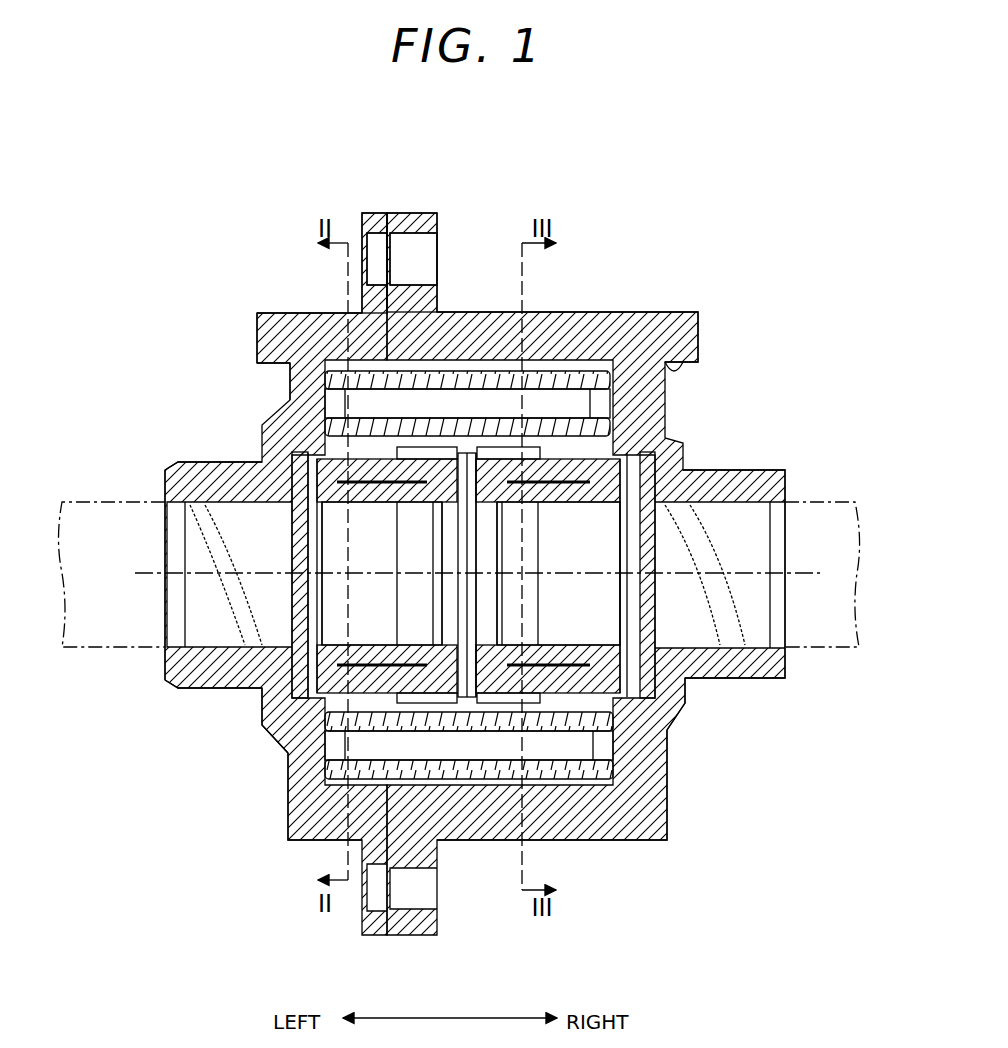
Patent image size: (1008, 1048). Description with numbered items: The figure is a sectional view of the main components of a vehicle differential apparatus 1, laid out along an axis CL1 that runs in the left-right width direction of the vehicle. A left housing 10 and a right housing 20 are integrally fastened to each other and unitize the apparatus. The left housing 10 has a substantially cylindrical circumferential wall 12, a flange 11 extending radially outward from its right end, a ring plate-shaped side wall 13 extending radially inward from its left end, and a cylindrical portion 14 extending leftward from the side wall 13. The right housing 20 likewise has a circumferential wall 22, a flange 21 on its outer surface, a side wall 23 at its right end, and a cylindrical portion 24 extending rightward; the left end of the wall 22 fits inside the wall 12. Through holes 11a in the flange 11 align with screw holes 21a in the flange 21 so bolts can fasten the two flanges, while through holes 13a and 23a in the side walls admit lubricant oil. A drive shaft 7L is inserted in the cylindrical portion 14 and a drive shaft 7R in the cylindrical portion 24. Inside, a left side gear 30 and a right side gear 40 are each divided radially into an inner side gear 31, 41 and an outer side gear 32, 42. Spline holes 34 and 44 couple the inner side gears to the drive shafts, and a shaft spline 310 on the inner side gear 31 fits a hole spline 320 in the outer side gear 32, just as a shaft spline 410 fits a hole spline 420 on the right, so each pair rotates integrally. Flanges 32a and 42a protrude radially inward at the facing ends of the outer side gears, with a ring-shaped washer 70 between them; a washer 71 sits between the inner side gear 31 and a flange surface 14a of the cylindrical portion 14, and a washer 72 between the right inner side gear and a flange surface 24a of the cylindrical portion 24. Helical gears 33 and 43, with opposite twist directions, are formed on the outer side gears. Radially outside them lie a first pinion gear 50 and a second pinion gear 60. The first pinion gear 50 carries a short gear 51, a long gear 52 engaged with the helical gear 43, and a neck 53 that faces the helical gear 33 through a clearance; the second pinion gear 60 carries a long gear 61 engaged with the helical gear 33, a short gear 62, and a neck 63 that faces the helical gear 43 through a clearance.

The vehicle differential apparatus 1 is at (702, 238).
The left housing 10 is at (287, 318).
The flange 11 is at (372, 213).
The through holes 11a is at (370, 240).
The circumferential wall 12 is at (300, 312).
The side wall 13 is at (288, 797).
The through hole 13a is at (298, 365).
The cylindrical portion 14 is at (185, 462).
The flange surface 14a is at (283, 735).
The right housing 20 is at (700, 318).
The flange 21 is at (400, 213).
The screw holes 21a is at (425, 240).
The circumferential wall 22 is at (612, 312).
The side wall 23 is at (667, 797).
The through hole 23a is at (680, 372).
The cylindrical portion 24 is at (745, 470).
The flange surface 24a is at (660, 690).
The left side gear 30 is at (368, 491).
The inner side gear 31 is at (405, 650).
The outer side gear 32 is at (375, 672).
The flange 32a is at (450, 645).
The helical gear 33 is at (438, 440).
The spline hole 34 is at (325, 645).
The right side gear 40 is at (591, 489).
The inner side gear 41 is at (612, 650).
The outer side gear 42 is at (573, 672).
The flange 42a is at (478, 650).
The helical gear 43 is at (530, 455).
The spline hole 44 is at (552, 645).
The first pinion gear 50 is at (464, 349).
The short gear 51 is at (340, 368).
The long gear 52 is at (535, 440).
The neck 53 is at (415, 372).
The second pinion gear 60 is at (523, 801).
The long gear 61 is at (423, 793).
The short gear 62 is at (597, 793).
The neck 63 is at (527, 773).
The washer 70 is at (464, 698).
The washer 71 is at (300, 657).
The washer 72 is at (650, 665).
The shaft spline 310 is at (348, 487).
The hole spline 320 is at (405, 573).
The shaft spline 410 is at (567, 487).
The hole spline 420 is at (616, 573).
The drive shaft 7L is at (100, 500).
The drive shaft 7R is at (835, 500).
The axis CL1 is at (455, 573).